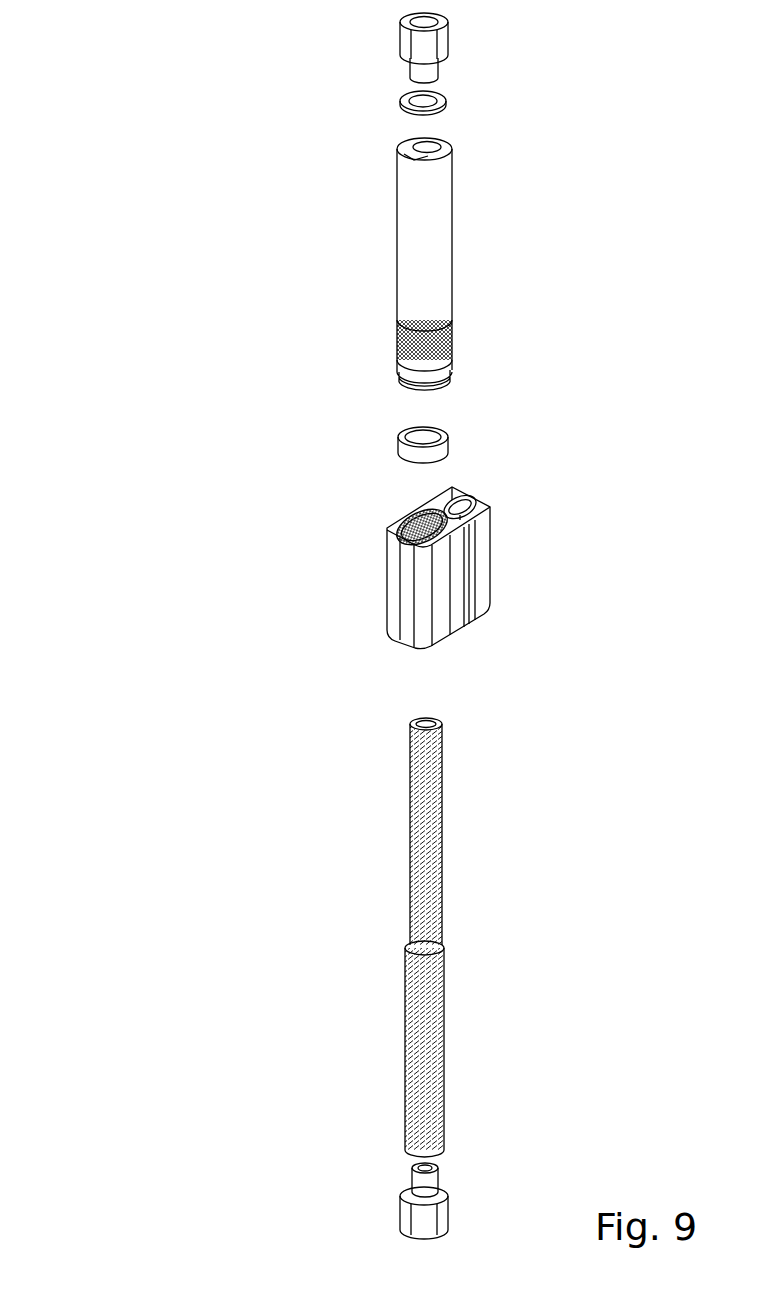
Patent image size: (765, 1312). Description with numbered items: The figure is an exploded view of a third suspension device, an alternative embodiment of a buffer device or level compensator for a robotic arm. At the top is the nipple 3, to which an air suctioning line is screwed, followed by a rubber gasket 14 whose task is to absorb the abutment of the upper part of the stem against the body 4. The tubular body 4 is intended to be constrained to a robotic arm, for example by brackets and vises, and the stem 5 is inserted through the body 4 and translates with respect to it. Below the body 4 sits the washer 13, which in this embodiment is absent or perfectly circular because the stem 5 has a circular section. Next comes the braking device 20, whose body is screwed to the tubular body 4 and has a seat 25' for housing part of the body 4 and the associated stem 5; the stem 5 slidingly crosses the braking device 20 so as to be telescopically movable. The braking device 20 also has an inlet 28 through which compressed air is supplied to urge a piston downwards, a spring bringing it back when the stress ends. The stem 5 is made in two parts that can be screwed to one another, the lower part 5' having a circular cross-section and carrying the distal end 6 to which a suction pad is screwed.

The nipple 3 is at (402, 47).
The rubber gasket 14 is at (400, 103).
The body 4 is at (415, 252).
The shaped washer 13 is at (400, 452).
The braking device 20 is at (486, 575).
The seat 25' is at (354, 525).
The inlet 28 is at (463, 507).
The stem 5 is at (428, 937).
The lower part 5' is at (348, 1049).
The distal end 6 is at (402, 1222).